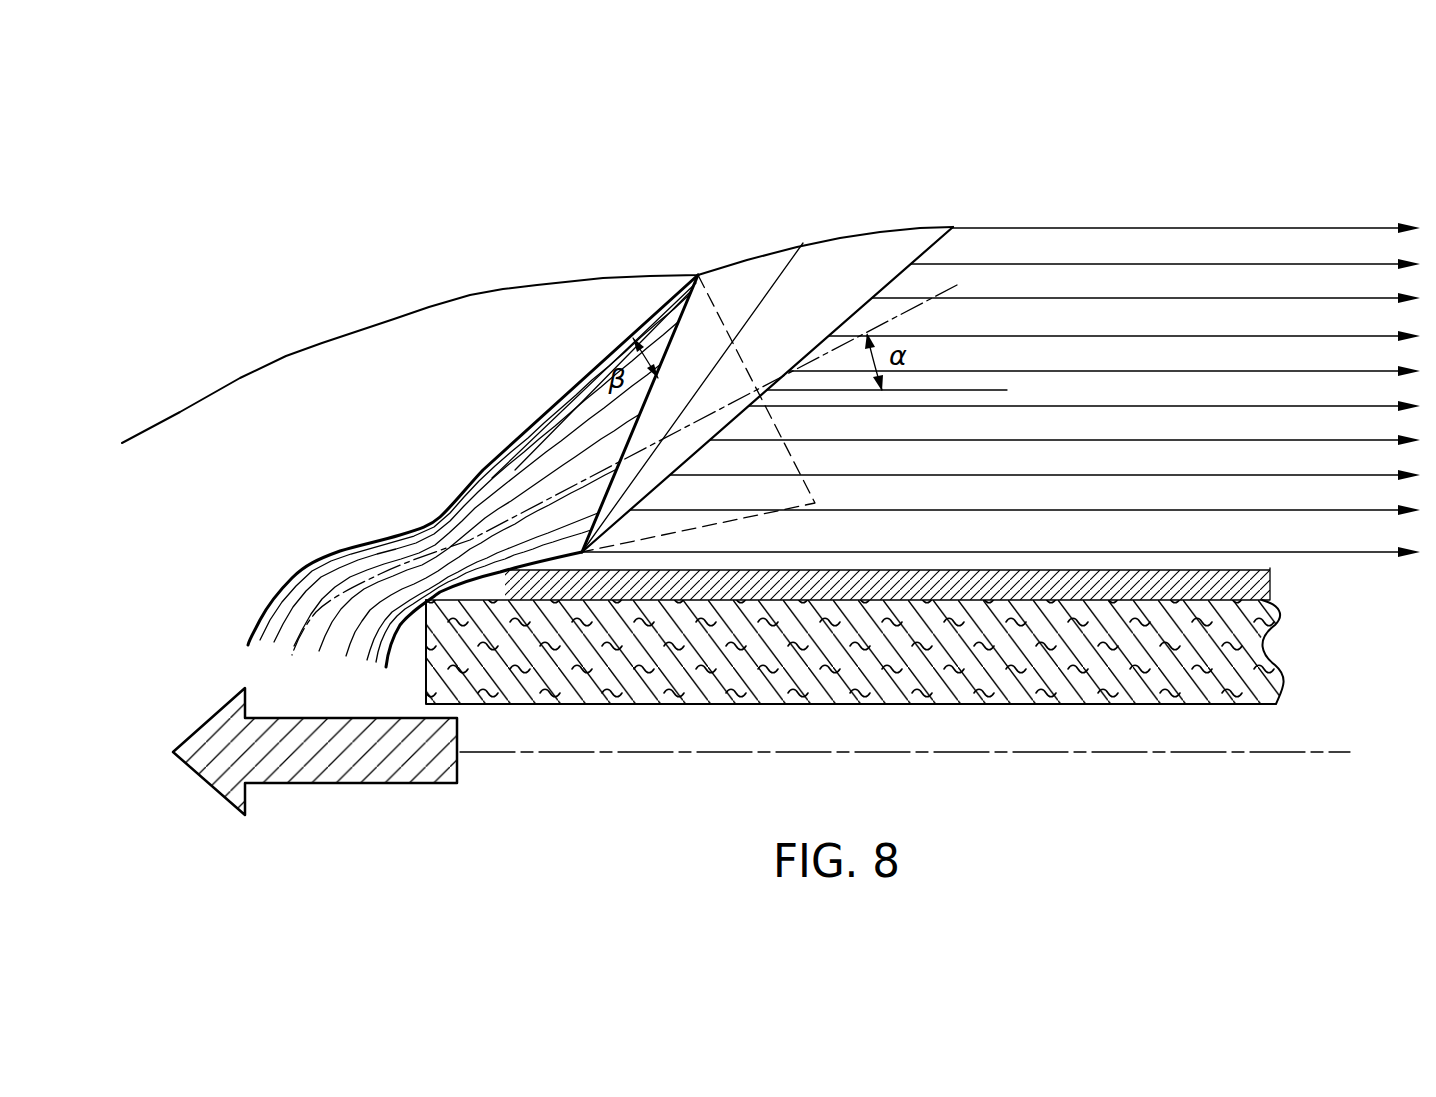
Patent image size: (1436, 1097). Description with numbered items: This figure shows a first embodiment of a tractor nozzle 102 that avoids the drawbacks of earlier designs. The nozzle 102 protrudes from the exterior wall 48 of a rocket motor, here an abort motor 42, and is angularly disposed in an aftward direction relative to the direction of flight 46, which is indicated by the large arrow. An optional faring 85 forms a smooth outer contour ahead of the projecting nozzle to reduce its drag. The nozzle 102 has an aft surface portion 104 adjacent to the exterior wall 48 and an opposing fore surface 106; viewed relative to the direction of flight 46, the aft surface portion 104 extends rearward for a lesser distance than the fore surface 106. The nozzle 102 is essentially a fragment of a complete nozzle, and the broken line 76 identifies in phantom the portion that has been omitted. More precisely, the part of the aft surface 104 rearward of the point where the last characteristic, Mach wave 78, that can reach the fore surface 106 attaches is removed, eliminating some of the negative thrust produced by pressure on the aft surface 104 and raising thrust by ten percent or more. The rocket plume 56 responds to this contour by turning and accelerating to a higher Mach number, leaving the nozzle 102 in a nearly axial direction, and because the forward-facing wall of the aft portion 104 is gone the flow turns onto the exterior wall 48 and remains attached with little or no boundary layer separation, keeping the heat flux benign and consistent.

The abort motor 42 is at (930, 718).
The direction of flight 46 is at (327, 766).
The exterior wall 48 is at (1135, 568).
The rocket plume 56 is at (1085, 298).
The broken line 76 is at (747, 517).
The Mach wave 78 is at (593, 513).
The faring 85 is at (583, 278).
The nozzle 102 is at (553, 335).
The aft surface portion 104 is at (538, 562).
The fore surface 106 is at (646, 322).